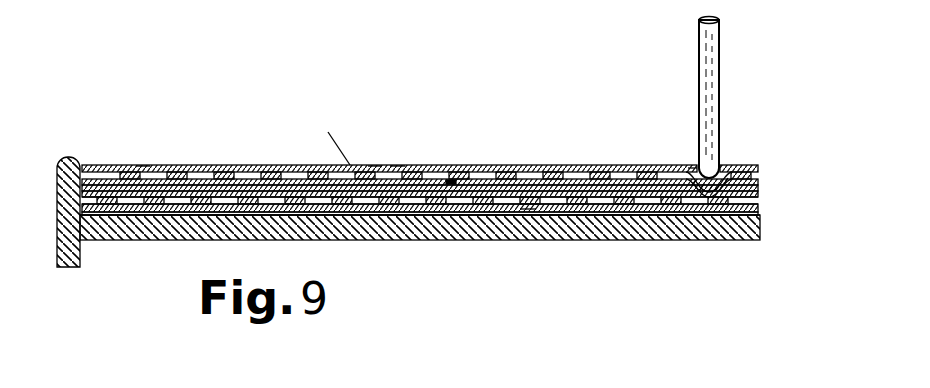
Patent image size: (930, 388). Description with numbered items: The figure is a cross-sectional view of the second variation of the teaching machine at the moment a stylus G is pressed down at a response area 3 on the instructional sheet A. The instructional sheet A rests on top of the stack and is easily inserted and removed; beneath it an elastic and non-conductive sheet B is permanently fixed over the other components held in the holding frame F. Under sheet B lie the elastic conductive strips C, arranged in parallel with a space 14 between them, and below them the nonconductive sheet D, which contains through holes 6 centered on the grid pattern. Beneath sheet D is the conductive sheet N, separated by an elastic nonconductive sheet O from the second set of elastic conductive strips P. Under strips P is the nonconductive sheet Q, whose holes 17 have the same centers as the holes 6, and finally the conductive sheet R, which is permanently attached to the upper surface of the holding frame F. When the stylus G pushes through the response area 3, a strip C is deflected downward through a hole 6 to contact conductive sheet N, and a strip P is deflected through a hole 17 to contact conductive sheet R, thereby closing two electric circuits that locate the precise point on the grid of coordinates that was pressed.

The holding frame F is at (63, 157).
The instructional sheet A is at (282, 166).
The elastic and non-conductive sheet B is at (210, 168).
The conductive strips C is at (177, 177).
The nonconductive sheet D is at (492, 178).
The conductive sheet N is at (762, 192).
The elastic and nonconductive sheet O is at (93, 176).
The conductive strips P is at (475, 215).
The nonconductive sheet Q is at (587, 215).
The conductive sheet R is at (660, 227).
The stylus G is at (710, 63).
The response area 3 is at (375, 165).
The through holes 6 is at (452, 180).
The space between conductive strips 14 is at (143, 165).
The holes 17 is at (527, 210).